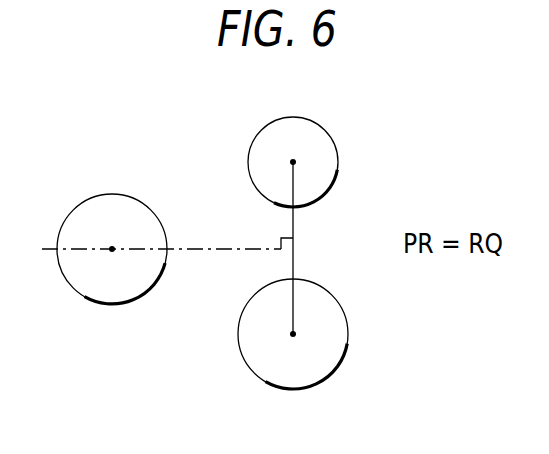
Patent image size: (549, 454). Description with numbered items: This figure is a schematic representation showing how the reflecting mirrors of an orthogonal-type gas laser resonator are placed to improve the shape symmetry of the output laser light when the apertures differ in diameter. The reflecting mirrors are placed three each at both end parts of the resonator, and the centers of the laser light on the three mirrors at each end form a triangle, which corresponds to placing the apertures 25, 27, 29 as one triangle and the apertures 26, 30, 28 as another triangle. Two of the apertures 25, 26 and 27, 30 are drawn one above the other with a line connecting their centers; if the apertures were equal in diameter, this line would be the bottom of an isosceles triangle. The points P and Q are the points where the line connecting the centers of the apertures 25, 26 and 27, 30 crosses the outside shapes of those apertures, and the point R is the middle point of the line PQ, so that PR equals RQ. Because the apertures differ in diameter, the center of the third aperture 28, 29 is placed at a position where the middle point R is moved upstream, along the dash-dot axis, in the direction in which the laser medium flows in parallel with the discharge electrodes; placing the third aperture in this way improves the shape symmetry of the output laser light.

The aperture 25 is at (344, 334).
The aperture 26 is at (348, 332).
The aperture 27 is at (344, 162).
The aperture 30 is at (338, 160).
The aperture 28 is at (112, 225).
The aperture 29 is at (133, 175).
The point P is at (293, 280).
The point Q is at (293, 206).
The middle point R is at (302, 247).